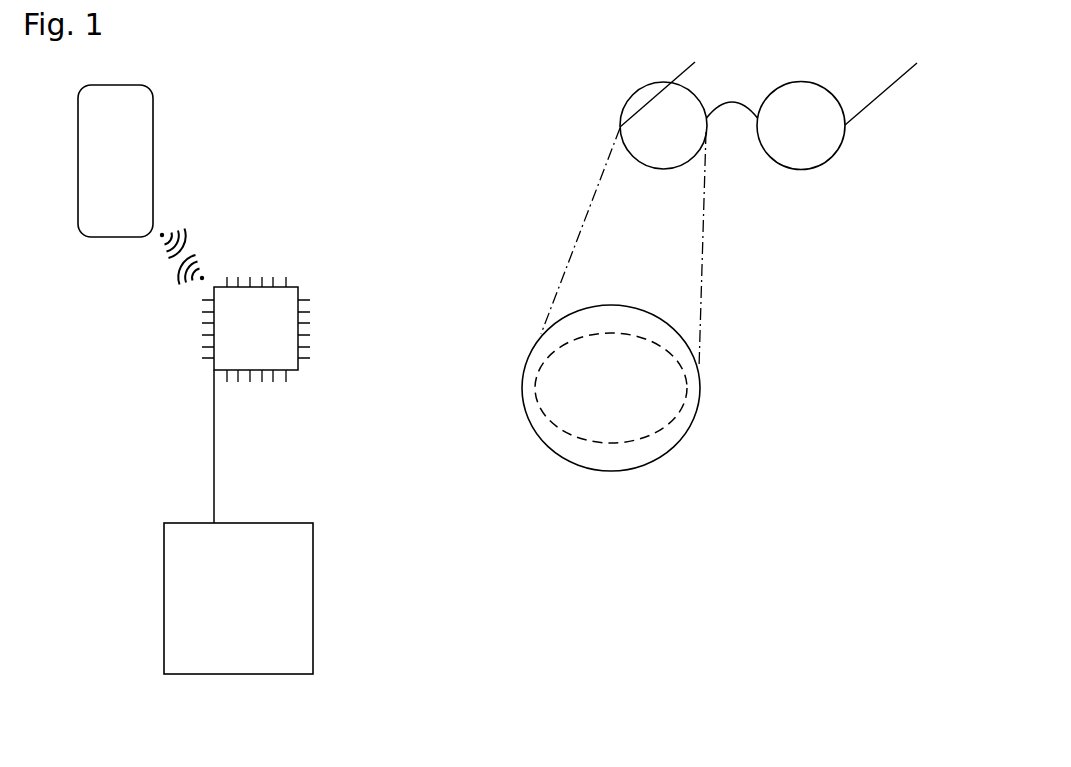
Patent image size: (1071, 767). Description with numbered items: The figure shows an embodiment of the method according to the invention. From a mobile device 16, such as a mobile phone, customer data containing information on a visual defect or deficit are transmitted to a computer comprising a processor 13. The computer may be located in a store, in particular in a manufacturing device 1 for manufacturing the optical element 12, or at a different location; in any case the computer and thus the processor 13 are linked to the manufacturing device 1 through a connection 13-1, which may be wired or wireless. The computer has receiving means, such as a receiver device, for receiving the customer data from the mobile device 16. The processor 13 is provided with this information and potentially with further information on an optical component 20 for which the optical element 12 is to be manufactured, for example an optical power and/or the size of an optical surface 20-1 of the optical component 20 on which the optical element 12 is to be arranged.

The manufacturing device 1 is at (250, 600).
The optical element 12 is at (648, 390).
The processor 13 is at (285, 293).
The connection 13-1 is at (214, 450).
The mobile device 16 is at (127, 145).
The optical component 20 is at (617, 100).
The optical surface 20-1 is at (662, 440).